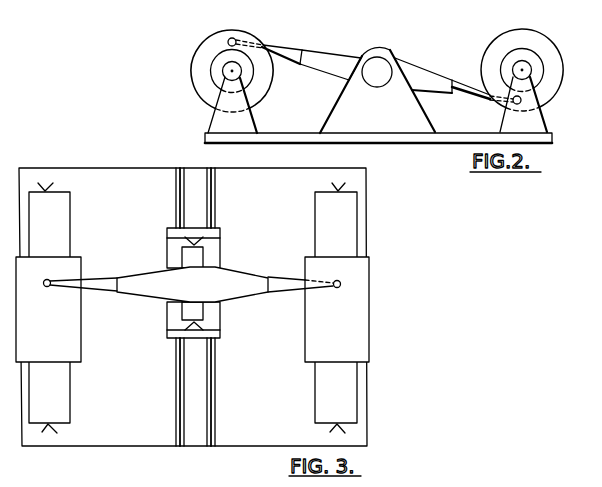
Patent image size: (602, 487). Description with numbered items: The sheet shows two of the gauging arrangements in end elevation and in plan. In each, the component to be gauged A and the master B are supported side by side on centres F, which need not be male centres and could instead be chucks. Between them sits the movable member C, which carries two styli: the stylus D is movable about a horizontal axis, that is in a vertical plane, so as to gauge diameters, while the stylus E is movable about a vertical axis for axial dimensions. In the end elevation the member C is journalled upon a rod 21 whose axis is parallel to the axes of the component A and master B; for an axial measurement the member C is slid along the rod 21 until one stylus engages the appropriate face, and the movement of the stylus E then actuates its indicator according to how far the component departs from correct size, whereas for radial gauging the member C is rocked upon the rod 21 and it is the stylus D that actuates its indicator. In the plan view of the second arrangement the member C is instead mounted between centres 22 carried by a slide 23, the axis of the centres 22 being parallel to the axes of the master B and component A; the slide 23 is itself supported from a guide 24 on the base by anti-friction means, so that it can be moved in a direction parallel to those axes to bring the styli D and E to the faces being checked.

In FIG. 2, the component to be gauged A is at (203, 65).
In FIG. 3, the component to be gauged A is at (58, 222).
In FIG. 2, the master B is at (553, 63).
In FIG. 3, the master B is at (358, 278).
In FIG. 2, the movable member C is at (425, 78).
In FIG. 3, the movable member C is at (215, 280).
In FIG. 2, the stylus D is at (280, 50).
In FIG. 3, the stylus D is at (102, 282).
In FIG. 2, the stylus E is at (468, 92).
In FIG. 3, the stylus E is at (285, 287).
In FIG. 3, the centres F is at (47, 186).
In FIG. 2, the rod 21 is at (375, 62).
In FIG. 3, the centres 22 is at (187, 238).
In FIG. 3, the slide 23 is at (215, 337).
In FIG. 3, the guide 24 is at (198, 428).